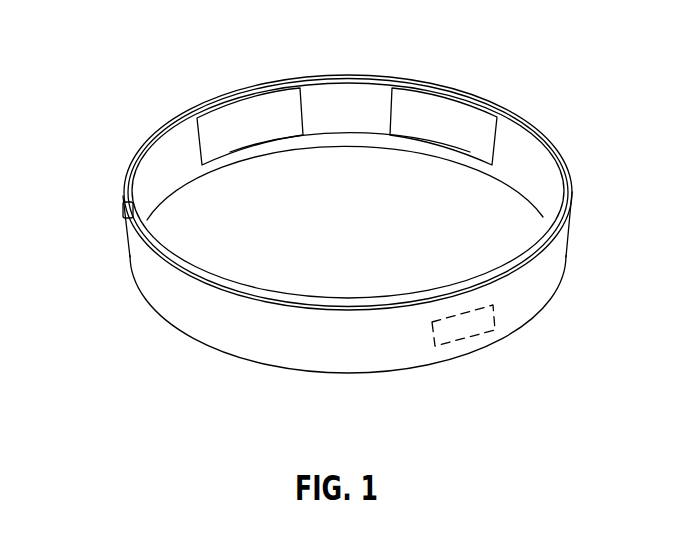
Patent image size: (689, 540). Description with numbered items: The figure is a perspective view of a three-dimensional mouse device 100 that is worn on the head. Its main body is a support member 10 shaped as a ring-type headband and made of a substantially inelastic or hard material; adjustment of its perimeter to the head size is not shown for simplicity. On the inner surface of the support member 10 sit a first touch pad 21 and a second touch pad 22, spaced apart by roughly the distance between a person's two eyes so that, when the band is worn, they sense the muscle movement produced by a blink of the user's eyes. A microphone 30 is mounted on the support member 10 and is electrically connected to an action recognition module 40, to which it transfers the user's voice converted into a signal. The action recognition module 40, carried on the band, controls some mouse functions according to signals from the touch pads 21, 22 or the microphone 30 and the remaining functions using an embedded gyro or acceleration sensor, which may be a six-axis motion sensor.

The three-dimensional mouse device 100 is at (130, 84).
The support member 10 is at (558, 165).
The first touch pad 21 is at (265, 103).
The second touch pad 22 is at (463, 120).
The microphone 30 is at (123, 210).
The action recognition module 40 is at (497, 322).